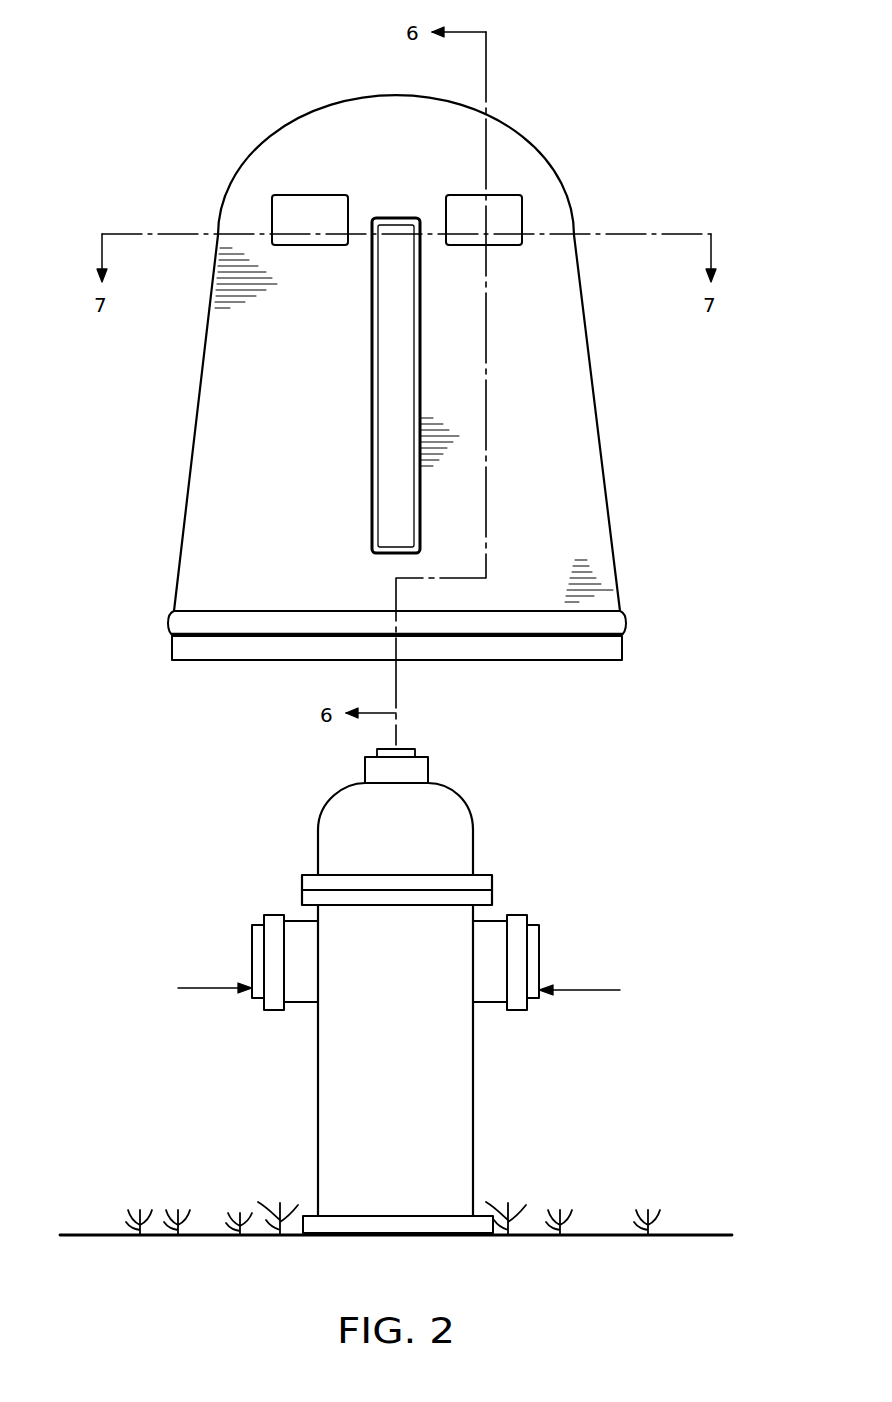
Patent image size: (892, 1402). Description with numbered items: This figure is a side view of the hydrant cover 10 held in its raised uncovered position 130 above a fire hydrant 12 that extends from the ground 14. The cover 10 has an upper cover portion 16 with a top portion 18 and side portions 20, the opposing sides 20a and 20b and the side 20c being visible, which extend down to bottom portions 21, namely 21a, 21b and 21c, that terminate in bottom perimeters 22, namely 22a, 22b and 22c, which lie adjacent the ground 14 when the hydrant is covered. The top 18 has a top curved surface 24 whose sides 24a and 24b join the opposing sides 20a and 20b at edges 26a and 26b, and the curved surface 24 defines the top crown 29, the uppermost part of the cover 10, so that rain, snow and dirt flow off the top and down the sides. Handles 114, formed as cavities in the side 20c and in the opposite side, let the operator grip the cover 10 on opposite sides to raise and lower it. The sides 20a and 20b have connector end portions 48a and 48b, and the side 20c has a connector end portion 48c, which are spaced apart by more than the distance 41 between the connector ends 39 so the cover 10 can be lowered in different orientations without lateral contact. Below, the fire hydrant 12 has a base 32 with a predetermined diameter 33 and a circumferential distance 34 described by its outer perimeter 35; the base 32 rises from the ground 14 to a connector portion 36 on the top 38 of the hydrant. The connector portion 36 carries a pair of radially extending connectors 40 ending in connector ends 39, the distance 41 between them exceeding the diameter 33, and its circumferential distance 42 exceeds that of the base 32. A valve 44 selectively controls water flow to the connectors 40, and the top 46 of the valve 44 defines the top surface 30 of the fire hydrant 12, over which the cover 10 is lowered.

The cover 10 is at (604, 487).
The fire hydrant 12 is at (473, 1028).
The ground 14 is at (600, 1225).
The upper cover portion 16 is at (585, 293).
The top portion 18 is at (400, 95).
The sides 20 is at (225, 405).
The side portion 20a is at (215, 276).
The side portion 20b is at (582, 255).
The side portion 20c is at (222, 485).
The bottom portions 21 is at (626, 630).
The bottom portion 21a is at (164, 630).
The bottom portion 21b is at (620, 600).
The bottom portion 21c is at (172, 612).
The bottom perimeter 22 is at (598, 662).
The bottom perimeter 22a is at (185, 662).
The bottom perimeter 22b is at (618, 665).
The bottom perimeter 22c is at (273, 662).
The top curved surface 24 is at (366, 97).
The side of curved surface 24a is at (302, 114).
The side of curved surface 24b is at (497, 117).
The edge 26a is at (220, 192).
The edge 26b is at (575, 192).
The top crown 29 is at (438, 98).
The top surface 30 is at (418, 750).
The base 32 is at (318, 1100).
The diameter 33 is at (240, 1133).
The circumferential distance 34 is at (342, 1175).
The outer perimeter 35 is at (473, 1073).
The connector portion 36 is at (180, 952).
The top of the hydrant 38 is at (559, 890).
The connector ends 39 is at (250, 925).
The connectors 40 is at (262, 998).
The distance between connector ends 41 is at (413, 991).
The circumferential distance 42 is at (540, 953).
The valve 44 is at (428, 772).
The top of the valve 46 is at (392, 748).
The connector end portion 48a is at (205, 353).
The connector end portion 48b is at (590, 333).
The connector end portion 48c is at (486, 362).
The handles 114 is at (292, 195).
The raised uncovered position 130 is at (645, 440).